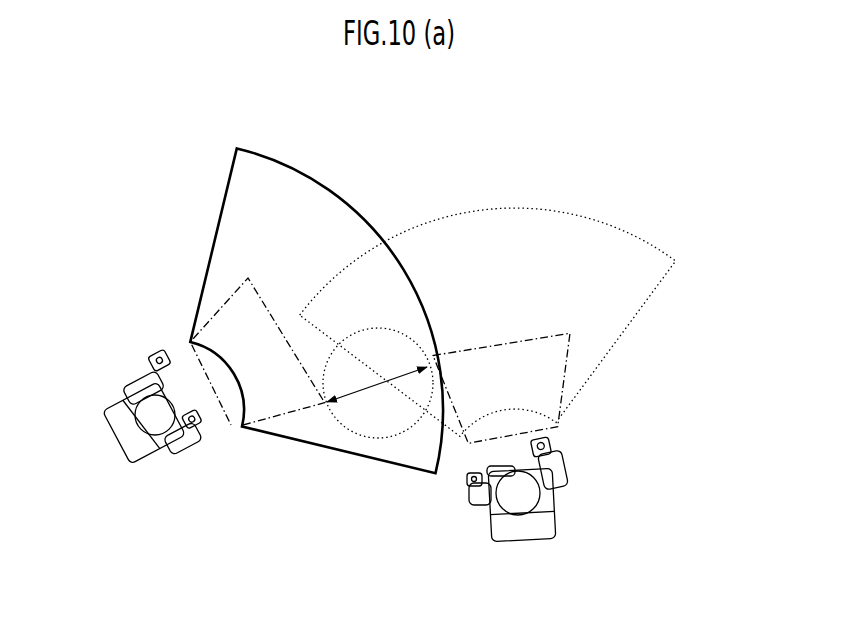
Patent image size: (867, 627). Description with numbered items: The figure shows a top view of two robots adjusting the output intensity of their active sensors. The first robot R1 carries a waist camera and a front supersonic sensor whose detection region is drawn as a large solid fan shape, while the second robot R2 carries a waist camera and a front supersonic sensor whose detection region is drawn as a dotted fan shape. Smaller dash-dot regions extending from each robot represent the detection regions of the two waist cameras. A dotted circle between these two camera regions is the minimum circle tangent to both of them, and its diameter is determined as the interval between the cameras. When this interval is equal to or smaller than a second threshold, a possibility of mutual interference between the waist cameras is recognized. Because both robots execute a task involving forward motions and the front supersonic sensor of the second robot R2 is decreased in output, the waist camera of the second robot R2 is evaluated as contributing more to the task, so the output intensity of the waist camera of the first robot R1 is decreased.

The first robot R1 is at (110, 393).
The second robot R2 is at (563, 543).